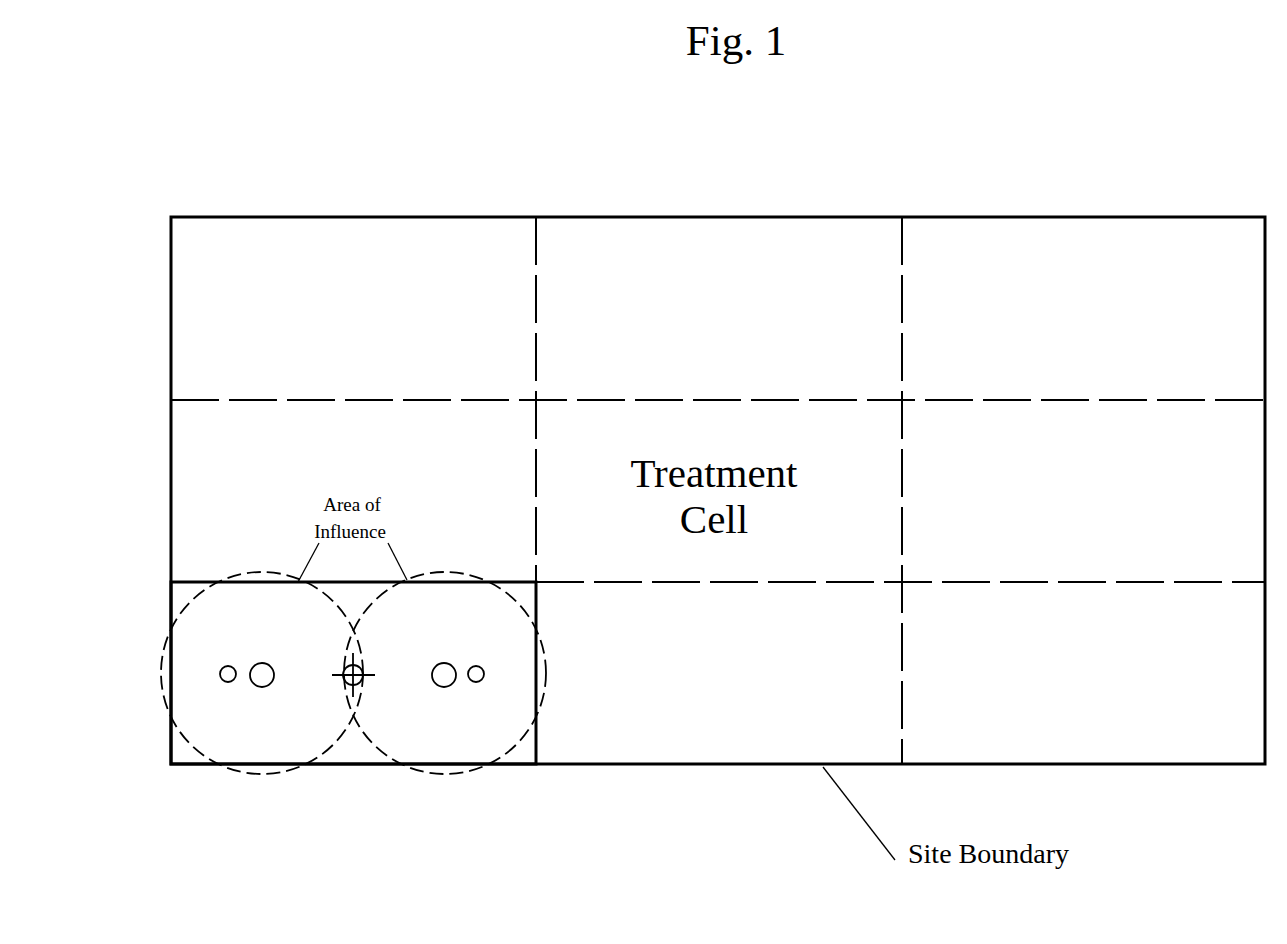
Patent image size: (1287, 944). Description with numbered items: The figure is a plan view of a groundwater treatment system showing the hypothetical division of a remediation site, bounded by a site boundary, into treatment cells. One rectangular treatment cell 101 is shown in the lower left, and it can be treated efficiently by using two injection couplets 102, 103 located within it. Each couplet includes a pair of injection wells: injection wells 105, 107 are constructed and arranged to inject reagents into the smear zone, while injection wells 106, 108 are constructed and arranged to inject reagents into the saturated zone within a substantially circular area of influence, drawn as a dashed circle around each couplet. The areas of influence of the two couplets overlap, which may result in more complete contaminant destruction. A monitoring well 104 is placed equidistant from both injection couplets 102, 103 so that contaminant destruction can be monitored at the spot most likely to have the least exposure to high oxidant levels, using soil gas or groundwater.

The treatment cell 101 is at (343, 742).
The injection couplet 102 is at (181, 719).
The injection couplet 103 is at (525, 677).
The monitoring well 104 is at (363, 667).
The injection well 105 is at (487, 670).
The injection well 106 is at (452, 687).
The injection well 107 is at (220, 671).
The injection well 108 is at (259, 688).